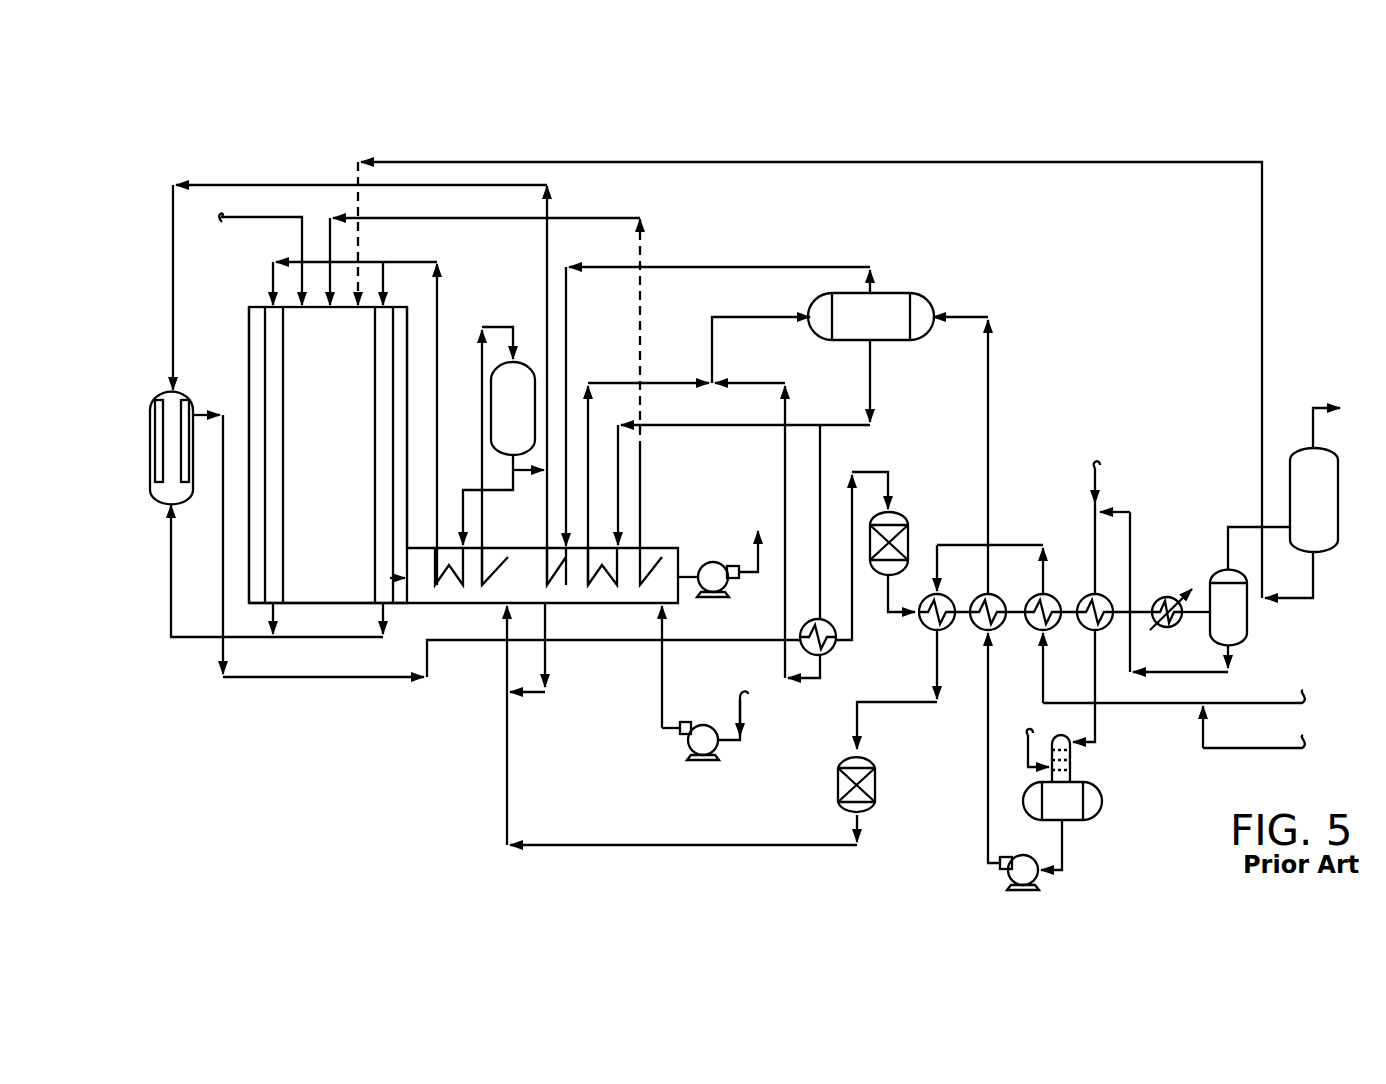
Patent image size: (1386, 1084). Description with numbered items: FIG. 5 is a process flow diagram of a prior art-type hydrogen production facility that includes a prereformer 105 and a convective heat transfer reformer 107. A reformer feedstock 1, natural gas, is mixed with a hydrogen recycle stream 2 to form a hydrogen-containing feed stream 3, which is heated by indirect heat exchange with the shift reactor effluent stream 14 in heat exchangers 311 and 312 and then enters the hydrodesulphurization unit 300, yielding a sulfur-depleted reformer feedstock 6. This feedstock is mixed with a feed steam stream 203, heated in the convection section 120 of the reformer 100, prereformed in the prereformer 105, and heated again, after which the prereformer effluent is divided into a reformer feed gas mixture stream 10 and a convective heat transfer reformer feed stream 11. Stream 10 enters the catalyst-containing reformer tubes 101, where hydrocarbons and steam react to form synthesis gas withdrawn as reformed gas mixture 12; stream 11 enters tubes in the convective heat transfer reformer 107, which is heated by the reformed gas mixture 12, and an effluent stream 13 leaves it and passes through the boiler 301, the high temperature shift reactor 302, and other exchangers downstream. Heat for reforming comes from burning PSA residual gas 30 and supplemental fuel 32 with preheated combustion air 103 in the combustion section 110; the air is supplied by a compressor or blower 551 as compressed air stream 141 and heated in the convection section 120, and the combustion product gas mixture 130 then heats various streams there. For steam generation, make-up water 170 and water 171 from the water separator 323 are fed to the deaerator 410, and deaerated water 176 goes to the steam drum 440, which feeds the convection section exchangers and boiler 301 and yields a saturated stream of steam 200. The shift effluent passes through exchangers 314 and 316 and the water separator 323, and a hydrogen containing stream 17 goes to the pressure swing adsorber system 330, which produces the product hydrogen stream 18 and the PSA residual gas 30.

The reformer feedstock 1 is at (1240, 703).
The hydrogen recycle stream 2 is at (1245, 748).
The hydrogen-containing feed stream 3 is at (1165, 703).
The sulfur-depleted reformer feedstock 6 is at (585, 845).
The reformer feed gas mixture stream 10 is at (437, 333).
The convective heat transfer reformer feed stream 11 is at (213, 185).
The reformed gas mixture 12 is at (176, 640).
The effluent stream 13 is at (306, 677).
The shift reactor effluent stream 14 is at (888, 603).
The hydrogen containing stream 17 is at (1245, 527).
The product hydrogen stream 18 is at (1313, 432).
The PSA residual gas 30 is at (788, 162).
The supplemental fuel 32 is at (248, 217).
The reformer 100 is at (343, 438).
The catalyst-containing reformer tubes 101 is at (262, 372).
The preheated combustion air 103 is at (416, 218).
The prereformer 105 is at (499, 414).
The convective heat transfer reformer 107 is at (193, 480).
The combustion section 110 is at (312, 437).
The convection section 120 is at (494, 548).
The combustion product gas mixture 130 is at (398, 590).
The compressed air stream 141 is at (662, 706).
The make-up water 170 is at (1100, 482).
The water 171 is at (1212, 672).
The water 176 is at (988, 397).
The saturated stream of steam 200 is at (700, 267).
The feed steam stream 203 is at (528, 692).
The hydrodesulphurization unit 300 is at (876, 770).
The heat exchanger 301 is at (826, 656).
The high temperature shift reactor 302 is at (908, 521).
The heat exchanger 311 is at (930, 633).
The heat exchanger 312 is at (1058, 632).
The heat exchanger 314 is at (972, 600).
The heat exchanger 316 is at (1081, 596).
The water separator 323 is at (1248, 623).
The pressure swing adsorber system 330 is at (1338, 550).
The deaerator 410 is at (1102, 795).
The steam drum 440 is at (852, 329).
The compressor or blower 551 is at (700, 757).